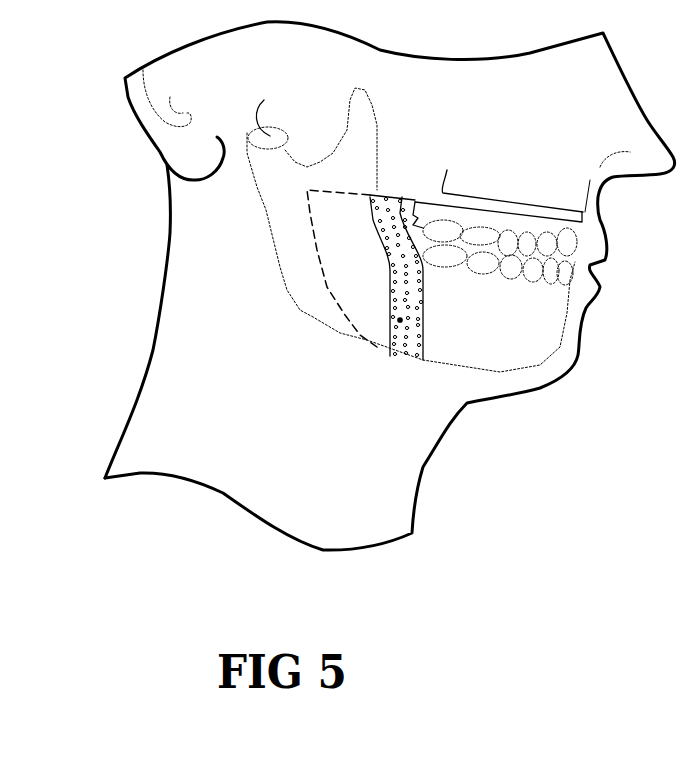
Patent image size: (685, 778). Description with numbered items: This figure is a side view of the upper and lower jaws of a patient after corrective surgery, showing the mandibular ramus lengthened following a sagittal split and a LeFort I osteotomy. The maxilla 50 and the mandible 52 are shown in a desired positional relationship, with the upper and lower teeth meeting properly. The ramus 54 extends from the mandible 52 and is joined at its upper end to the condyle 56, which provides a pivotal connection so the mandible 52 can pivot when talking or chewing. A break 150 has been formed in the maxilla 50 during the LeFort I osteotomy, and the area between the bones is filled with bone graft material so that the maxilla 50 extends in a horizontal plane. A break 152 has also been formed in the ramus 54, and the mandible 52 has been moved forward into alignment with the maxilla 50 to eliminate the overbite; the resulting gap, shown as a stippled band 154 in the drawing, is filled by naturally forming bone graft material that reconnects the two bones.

The maxilla 50 is at (517, 157).
The mandible 52 is at (507, 332).
The mandibular ramus 54 is at (313, 267).
The condyle 56 is at (312, 122).
The break 150 is at (567, 193).
The break 152 is at (400, 320).
The treatment band region 154 is at (413, 330).